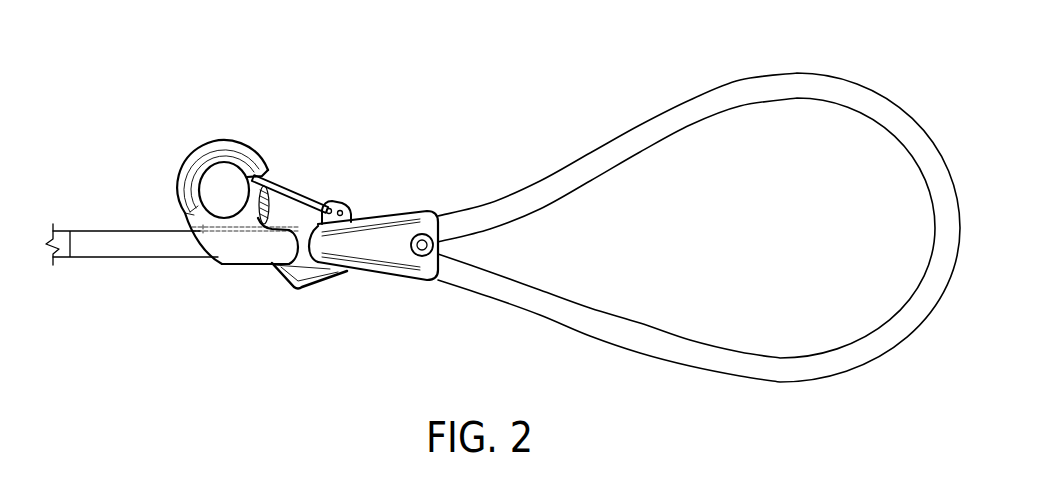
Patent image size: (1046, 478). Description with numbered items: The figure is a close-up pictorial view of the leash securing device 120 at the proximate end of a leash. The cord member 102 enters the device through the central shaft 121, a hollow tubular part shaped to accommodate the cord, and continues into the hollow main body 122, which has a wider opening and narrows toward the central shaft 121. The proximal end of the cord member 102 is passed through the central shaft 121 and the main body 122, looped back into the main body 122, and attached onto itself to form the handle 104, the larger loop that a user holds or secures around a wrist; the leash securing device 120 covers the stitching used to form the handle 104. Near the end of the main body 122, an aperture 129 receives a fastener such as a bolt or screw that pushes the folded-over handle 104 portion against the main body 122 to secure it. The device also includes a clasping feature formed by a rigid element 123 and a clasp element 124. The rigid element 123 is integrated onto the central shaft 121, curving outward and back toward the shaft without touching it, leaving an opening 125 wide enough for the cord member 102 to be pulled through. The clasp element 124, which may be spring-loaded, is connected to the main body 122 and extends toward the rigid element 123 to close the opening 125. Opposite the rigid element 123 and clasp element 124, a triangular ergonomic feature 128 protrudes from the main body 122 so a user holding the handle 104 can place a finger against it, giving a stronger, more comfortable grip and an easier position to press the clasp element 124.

The cord member 102 is at (98, 229).
The handle 104 is at (672, 100).
The leash securing device 120 is at (277, 140).
The central shaft 121 is at (247, 266).
The main body 122 is at (388, 211).
The rigid element 123 is at (198, 146).
The clasp element 124 is at (305, 196).
The opening 125 is at (260, 206).
The ergonomic feature 128 is at (316, 284).
The aperture 129 is at (427, 230).